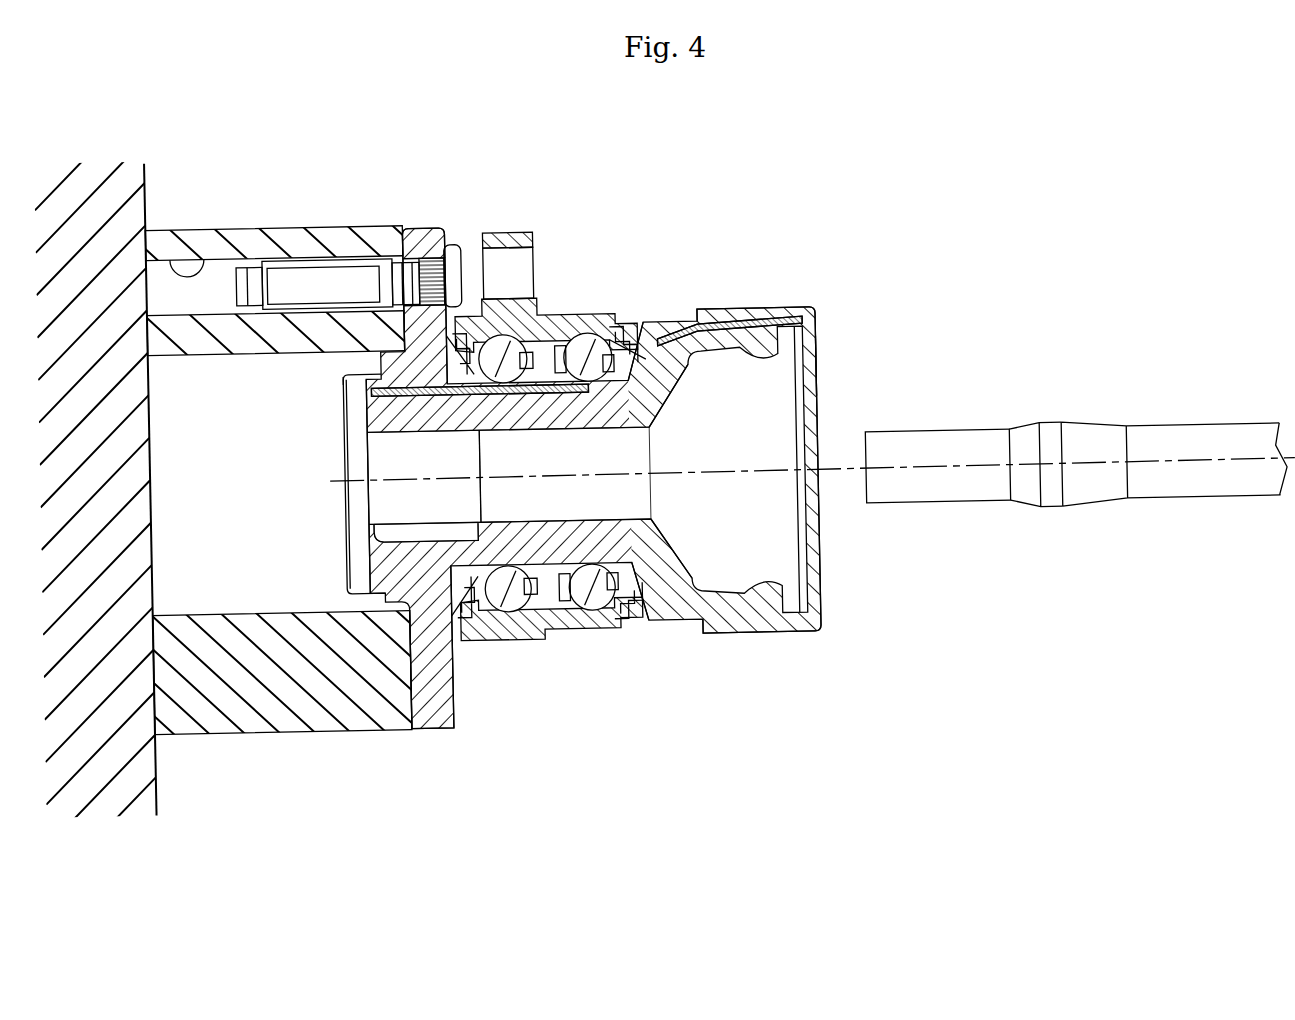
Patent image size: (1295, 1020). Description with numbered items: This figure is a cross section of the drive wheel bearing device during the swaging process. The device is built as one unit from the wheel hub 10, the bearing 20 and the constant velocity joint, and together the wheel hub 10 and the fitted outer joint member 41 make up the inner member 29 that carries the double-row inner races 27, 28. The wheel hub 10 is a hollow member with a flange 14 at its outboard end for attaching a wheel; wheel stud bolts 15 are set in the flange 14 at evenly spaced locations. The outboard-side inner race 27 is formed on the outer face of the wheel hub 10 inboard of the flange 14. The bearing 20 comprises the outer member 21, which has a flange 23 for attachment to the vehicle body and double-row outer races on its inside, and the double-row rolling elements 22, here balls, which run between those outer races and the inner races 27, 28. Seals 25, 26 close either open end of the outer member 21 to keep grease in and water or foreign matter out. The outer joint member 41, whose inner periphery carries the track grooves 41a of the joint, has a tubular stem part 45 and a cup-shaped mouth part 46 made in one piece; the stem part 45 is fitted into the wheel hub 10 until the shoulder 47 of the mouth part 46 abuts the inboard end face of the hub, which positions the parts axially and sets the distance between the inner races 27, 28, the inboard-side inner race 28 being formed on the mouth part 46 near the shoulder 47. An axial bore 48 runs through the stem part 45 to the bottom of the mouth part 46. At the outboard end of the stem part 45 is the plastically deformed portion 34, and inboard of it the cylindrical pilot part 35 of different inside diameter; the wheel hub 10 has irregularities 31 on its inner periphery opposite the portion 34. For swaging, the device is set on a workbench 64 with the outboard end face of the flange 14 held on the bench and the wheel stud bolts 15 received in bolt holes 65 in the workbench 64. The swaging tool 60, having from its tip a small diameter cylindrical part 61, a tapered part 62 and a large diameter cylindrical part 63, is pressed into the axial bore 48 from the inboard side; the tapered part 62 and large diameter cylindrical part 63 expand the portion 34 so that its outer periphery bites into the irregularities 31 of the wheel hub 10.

The wheel hub 10 is at (342, 370).
The flange 14 is at (424, 226).
The wheel stud bolts 15 is at (302, 255).
The bearing 20 is at (557, 434).
The outer member 21 is at (551, 315).
The double-row rolling elements 22 is at (561, 404).
The flange 23 is at (516, 231).
The seal 25 is at (465, 325).
The seal 26 is at (629, 313).
The outboard-side inner race 27 is at (517, 382).
The inboard-side inner race 28 is at (623, 405).
The inner member 29 is at (359, 546).
The irregularities 31 is at (381, 423).
The plastically deformed portion 34 is at (379, 511).
The pilot part 35 is at (478, 436).
The outer joint member 41 is at (745, 309).
The track grooves 41a is at (819, 371).
The stem part 45 is at (512, 539).
The mouth part 46 is at (668, 327).
The shoulder 47 is at (552, 612).
The axial bore 48 is at (560, 511).
The swaging tool 60 is at (1075, 409).
The small diameter cylindrical part 61 is at (947, 436).
The tapered part 62 is at (1019, 432).
The large diameter cylindrical part 63 is at (1051, 430).
The workbench 64 is at (315, 728).
The bolt holes 65 is at (216, 252).